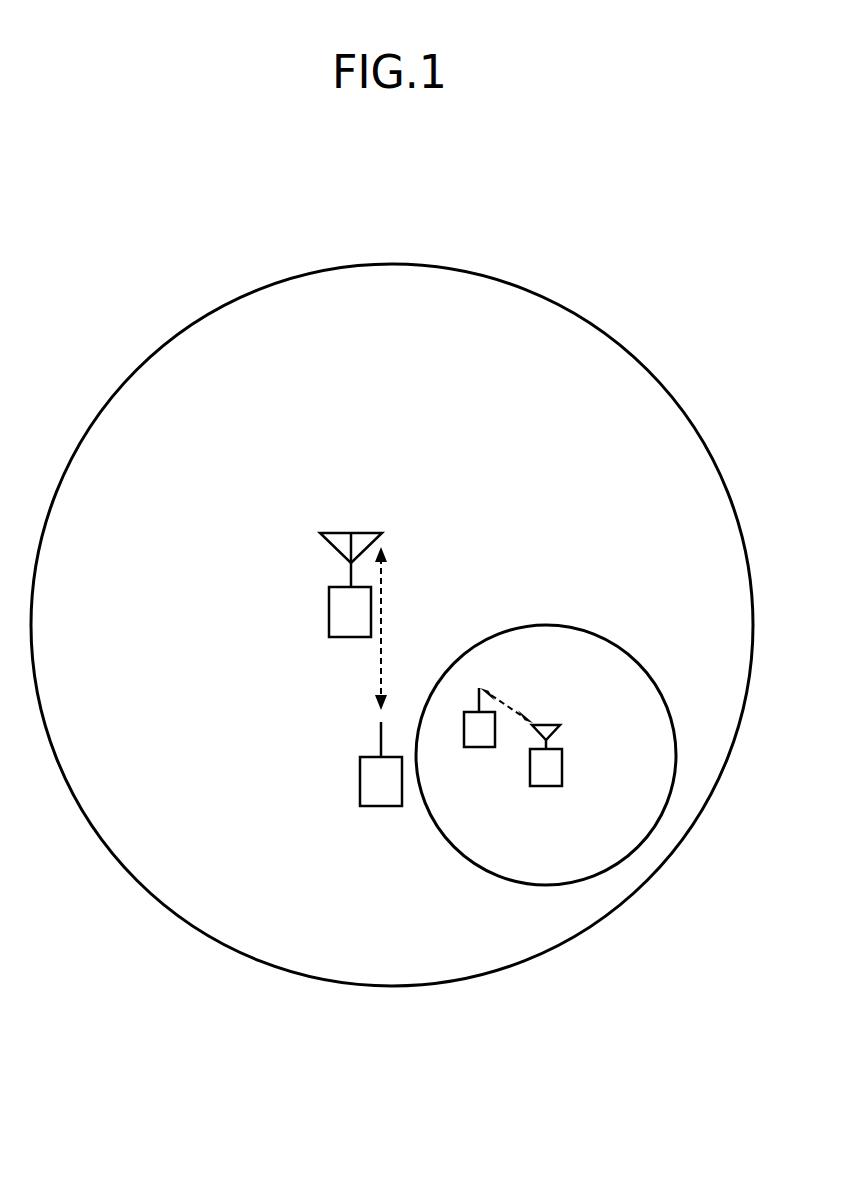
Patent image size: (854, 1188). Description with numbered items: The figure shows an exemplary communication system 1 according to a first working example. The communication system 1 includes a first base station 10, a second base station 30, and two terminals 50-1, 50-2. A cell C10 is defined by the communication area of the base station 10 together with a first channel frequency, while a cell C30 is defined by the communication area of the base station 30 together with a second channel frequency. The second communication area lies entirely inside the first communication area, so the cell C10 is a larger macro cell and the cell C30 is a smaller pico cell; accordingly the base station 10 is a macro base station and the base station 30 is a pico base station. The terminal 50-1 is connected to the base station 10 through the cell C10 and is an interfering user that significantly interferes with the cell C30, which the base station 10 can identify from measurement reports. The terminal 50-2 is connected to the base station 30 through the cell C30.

The communication system 1 is at (393, 228).
The cell C10 is at (582, 312).
The base station 10 is at (329, 612).
The base station 30 is at (562, 765).
The cell C30 is at (545, 625).
The terminal 50-1 is at (380, 806).
The terminal 50-2 is at (479, 747).